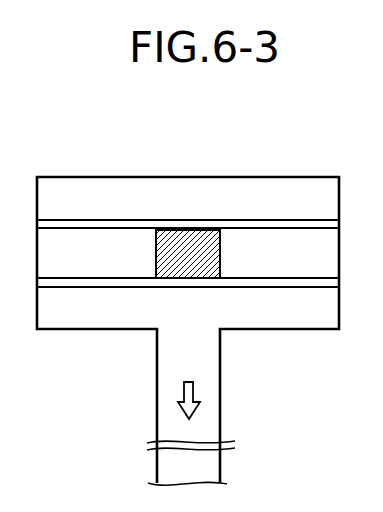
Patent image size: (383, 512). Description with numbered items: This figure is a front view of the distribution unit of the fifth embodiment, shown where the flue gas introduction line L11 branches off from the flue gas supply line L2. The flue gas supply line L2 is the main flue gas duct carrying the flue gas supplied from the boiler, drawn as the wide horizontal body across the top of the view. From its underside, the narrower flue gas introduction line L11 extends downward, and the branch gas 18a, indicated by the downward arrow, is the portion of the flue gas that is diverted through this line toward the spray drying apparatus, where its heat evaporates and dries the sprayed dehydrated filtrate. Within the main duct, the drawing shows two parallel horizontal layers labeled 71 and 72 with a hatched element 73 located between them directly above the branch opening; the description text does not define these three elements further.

The upper layer 71 is at (265, 219).
The lower layer 72 is at (265, 288).
The hatched element 73 is at (155, 253).
The flue gas supply line L2 is at (304, 177).
The flue gas introduction line L11 is at (221, 424).
The branch gas 18a is at (180, 396).